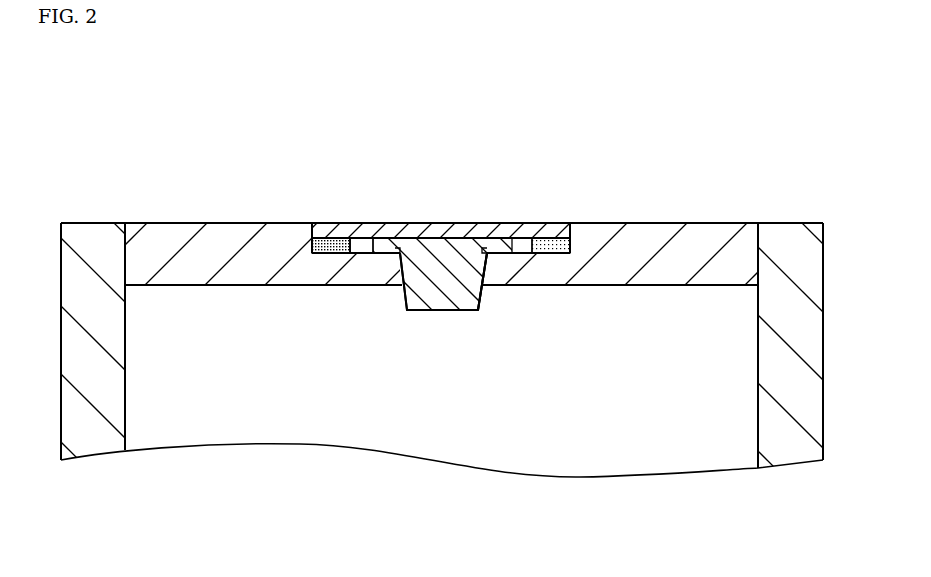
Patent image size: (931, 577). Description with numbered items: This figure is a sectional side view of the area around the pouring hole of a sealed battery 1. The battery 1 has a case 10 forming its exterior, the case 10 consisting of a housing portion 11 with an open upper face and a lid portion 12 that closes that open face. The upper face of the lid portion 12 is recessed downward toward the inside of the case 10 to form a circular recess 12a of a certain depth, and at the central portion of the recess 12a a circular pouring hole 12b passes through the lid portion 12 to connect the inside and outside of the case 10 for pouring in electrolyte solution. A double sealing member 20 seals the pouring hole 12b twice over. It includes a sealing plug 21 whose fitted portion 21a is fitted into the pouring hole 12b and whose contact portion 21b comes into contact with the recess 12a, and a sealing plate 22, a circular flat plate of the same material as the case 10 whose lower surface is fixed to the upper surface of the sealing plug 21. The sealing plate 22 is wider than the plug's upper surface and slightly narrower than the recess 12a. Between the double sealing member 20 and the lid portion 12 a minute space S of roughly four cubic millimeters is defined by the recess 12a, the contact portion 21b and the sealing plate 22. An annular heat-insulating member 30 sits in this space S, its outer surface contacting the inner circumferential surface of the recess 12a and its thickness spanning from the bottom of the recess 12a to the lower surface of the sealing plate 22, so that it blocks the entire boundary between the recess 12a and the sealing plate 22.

The battery 1 is at (105, 108).
The case 10 is at (793, 153).
The housing portion 11 is at (790, 218).
The lid portion 12 is at (705, 218).
The recess 12a is at (523, 237).
The pouring hole 12b is at (404, 278).
The double sealing member 20 is at (414, 192).
The sealing plug 21 is at (478, 322).
The fitted portion 21a is at (446, 312).
The contact portion 21b is at (500, 253).
The sealing plate 22 is at (447, 223).
The heat-insulating member 30 is at (333, 242).
The space S is at (365, 247).